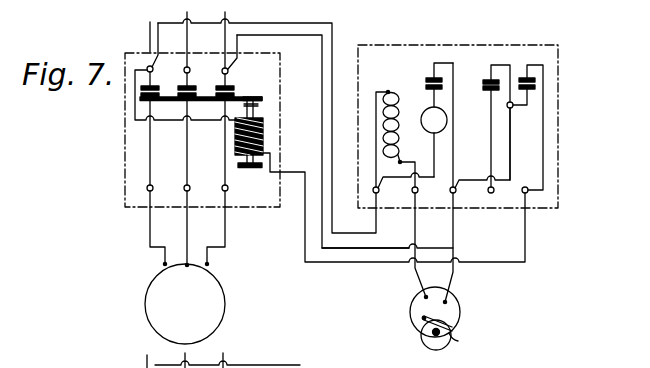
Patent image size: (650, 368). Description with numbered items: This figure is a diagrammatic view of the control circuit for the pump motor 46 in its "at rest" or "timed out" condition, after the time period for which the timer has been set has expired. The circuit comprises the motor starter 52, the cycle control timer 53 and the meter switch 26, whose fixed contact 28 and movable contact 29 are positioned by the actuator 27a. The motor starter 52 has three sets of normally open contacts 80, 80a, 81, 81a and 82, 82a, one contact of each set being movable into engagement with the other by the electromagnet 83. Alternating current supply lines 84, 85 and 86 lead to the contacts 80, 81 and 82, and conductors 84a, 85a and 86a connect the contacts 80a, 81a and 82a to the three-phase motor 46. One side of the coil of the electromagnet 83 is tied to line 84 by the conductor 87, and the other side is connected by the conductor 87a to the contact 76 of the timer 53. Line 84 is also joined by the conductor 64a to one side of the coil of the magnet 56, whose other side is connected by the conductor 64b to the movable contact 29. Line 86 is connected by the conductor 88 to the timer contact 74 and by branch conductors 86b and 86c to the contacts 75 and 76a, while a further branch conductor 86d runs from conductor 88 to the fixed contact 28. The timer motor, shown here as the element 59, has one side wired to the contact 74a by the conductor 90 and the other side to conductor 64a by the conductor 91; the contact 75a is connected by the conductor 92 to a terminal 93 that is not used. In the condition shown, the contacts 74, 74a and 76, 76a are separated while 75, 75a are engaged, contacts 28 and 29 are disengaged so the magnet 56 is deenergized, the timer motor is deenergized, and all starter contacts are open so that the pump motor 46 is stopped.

The meter switch 26 is at (466, 308).
The actuator 27a is at (424, 336).
The fixed contact 28 is at (453, 323).
The movable contact 29 is at (449, 336).
The pump motor 46 is at (185, 304).
The motor starter 52 is at (120, 137).
The cycle control timer 53 is at (563, 146).
The magnet 56 is at (370, 128).
The relay coil 59 is at (434, 120).
The conductor 64a is at (362, 232).
The conductor 64b is at (407, 243).
The contact 74 is at (433, 75).
The contact 74a is at (425, 84).
The contact 75 is at (490, 78).
The contact 75a is at (488, 92).
The contact 76 is at (536, 79).
The contact 76a is at (536, 88).
The contact 80 is at (153, 71).
The contact 80a is at (140, 98).
The contact 81 is at (190, 71).
The contact 81a is at (199, 106).
The contact 82 is at (229, 72).
The contact 82a is at (232, 97).
The electromagnet 83 is at (264, 133).
The alternating current supply line 84 is at (149, 33).
The conductor 84a is at (148, 163).
The alternating current supply line 85 is at (187, 38).
The conductor 85a is at (186, 151).
The alternating current supply line 86 is at (224, 42).
The conductor 86a is at (224, 156).
The branch conductor 86b is at (505, 148).
The branch conductor 86c is at (512, 108).
The branch conductor 86d is at (462, 235).
The conductor 87 is at (201, 108).
The conductor 87a is at (306, 263).
The conductor 88 is at (367, 249).
The conductor 90 is at (432, 100).
The conductor 91 is at (432, 146).
The conductor 92 is at (490, 138).
The terminal 93 is at (493, 192).